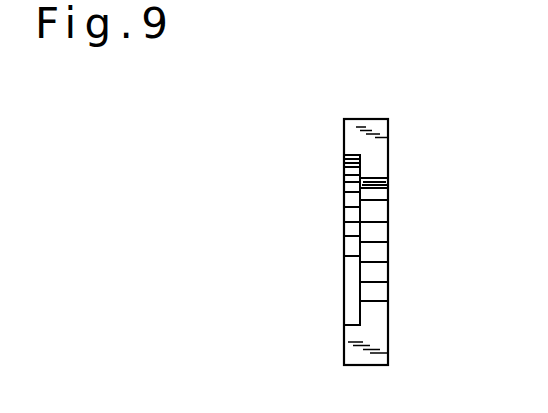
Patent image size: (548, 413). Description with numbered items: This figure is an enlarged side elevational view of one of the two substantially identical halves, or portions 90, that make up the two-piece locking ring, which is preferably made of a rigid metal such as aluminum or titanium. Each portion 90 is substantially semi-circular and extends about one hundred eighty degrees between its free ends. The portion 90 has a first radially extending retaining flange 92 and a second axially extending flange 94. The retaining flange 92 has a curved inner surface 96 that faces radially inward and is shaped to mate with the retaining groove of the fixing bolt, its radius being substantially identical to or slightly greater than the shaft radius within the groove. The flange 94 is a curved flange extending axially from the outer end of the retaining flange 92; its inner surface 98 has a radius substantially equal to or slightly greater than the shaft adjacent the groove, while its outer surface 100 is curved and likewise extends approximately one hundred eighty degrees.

The portion of locking ring 90 is at (375, 106).
The retaining flange 92 is at (368, 316).
The axially extending flange 94 is at (350, 353).
The curved inner surface 96 is at (373, 301).
The inner surface of flange 98 is at (344, 166).
The outer surface of flange 100 is at (368, 366).